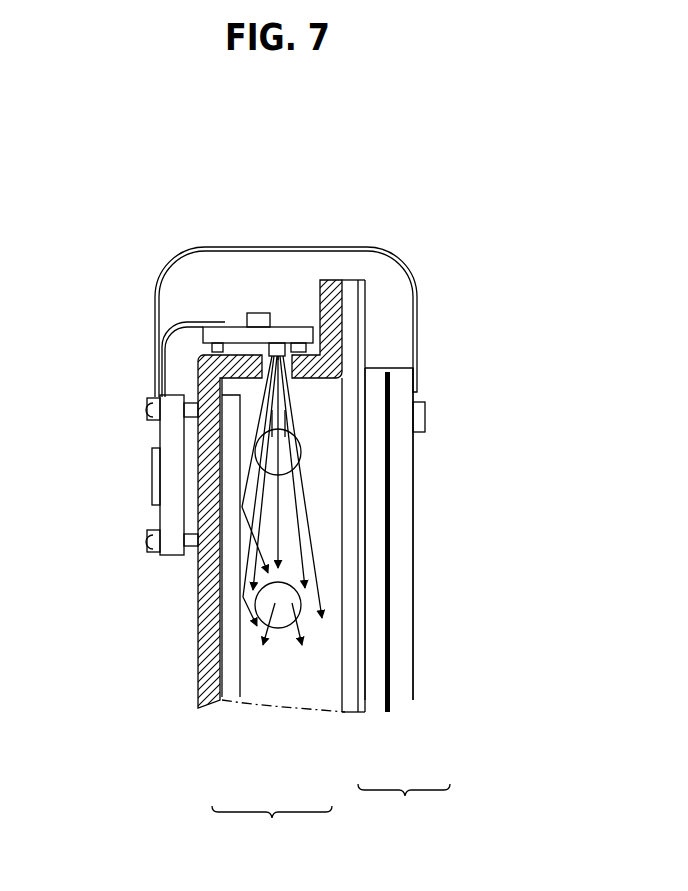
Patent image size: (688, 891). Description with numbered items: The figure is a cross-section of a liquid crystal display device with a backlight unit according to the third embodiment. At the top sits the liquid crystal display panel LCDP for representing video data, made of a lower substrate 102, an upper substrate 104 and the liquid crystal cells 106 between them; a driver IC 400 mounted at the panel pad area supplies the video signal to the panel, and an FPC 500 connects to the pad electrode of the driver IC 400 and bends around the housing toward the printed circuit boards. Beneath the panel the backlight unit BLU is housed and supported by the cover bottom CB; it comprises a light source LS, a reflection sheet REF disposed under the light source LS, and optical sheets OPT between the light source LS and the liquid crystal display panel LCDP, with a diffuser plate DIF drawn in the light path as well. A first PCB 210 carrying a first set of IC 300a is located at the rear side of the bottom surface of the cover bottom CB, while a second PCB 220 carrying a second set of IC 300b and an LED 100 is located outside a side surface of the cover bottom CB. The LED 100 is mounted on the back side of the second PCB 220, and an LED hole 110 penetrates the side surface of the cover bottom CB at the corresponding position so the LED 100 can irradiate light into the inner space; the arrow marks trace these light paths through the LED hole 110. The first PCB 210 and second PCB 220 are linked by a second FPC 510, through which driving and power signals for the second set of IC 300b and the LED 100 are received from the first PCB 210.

The FPC 500 is at (155, 290).
The second FPC 510 is at (167, 325).
The second PCB 220 is at (236, 337).
The second set of IC 300b is at (258, 318).
The LED 100 is at (278, 350).
The LED hole 110 is at (291, 366).
The cover bottom CB is at (207, 597).
The reflection sheet REF is at (229, 692).
The light source LS is at (283, 617).
The diffuser plate DIF is at (347, 704).
The optical sheet OPT is at (358, 706).
The lower substrate 102 is at (373, 703).
The liquid crystal cells 106 is at (388, 712).
The upper substrate 104 is at (407, 700).
The liquid crystal display panel LCDP is at (404, 803).
The backlight unit BLU is at (272, 826).
The driver IC 400 is at (426, 418).
The first PCB 210 is at (172, 520).
The first set of IC 300a is at (157, 480).